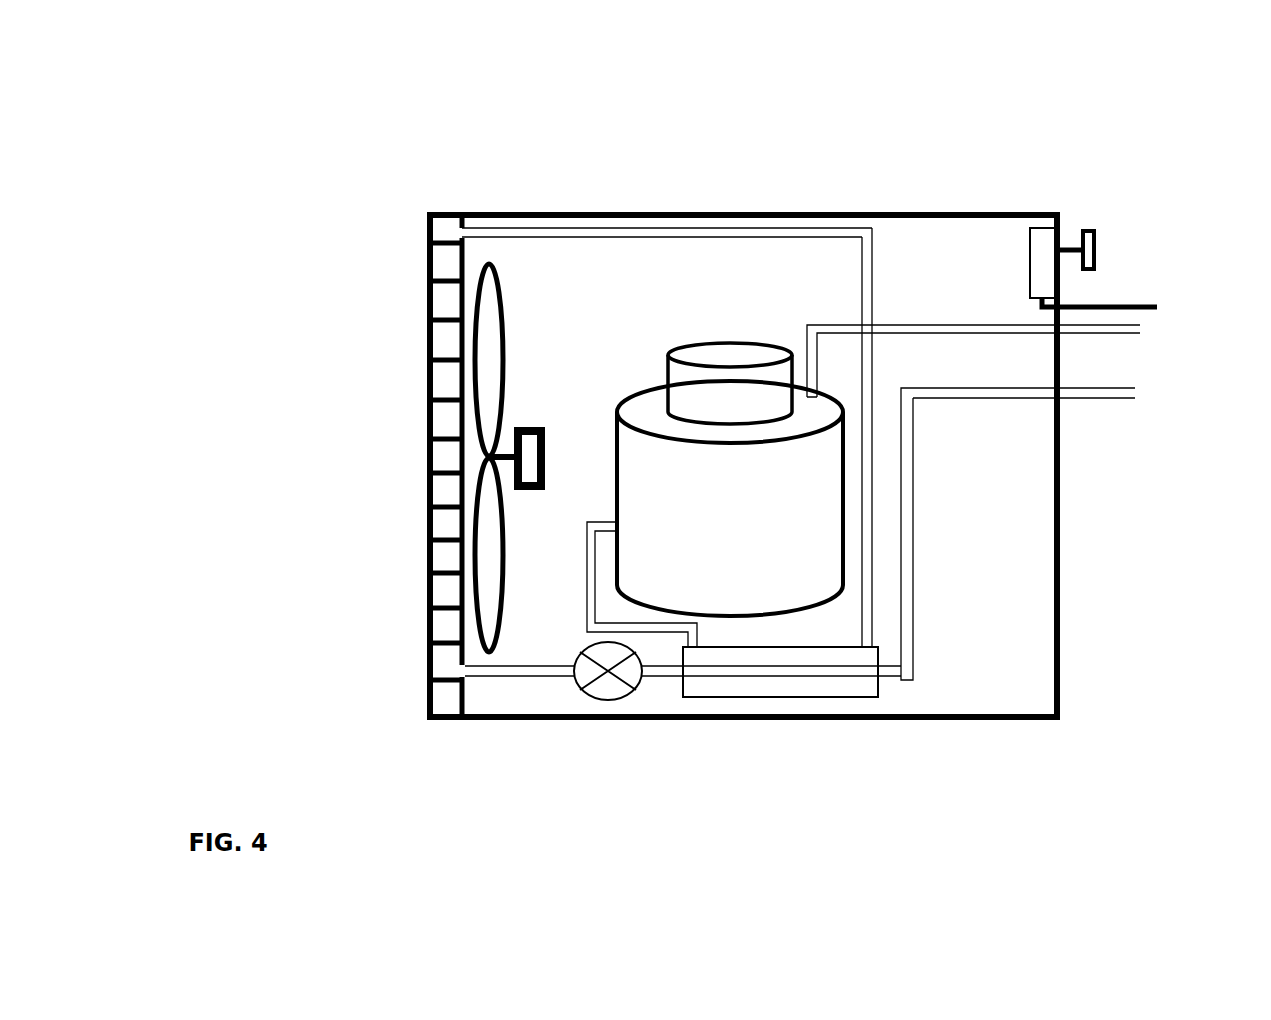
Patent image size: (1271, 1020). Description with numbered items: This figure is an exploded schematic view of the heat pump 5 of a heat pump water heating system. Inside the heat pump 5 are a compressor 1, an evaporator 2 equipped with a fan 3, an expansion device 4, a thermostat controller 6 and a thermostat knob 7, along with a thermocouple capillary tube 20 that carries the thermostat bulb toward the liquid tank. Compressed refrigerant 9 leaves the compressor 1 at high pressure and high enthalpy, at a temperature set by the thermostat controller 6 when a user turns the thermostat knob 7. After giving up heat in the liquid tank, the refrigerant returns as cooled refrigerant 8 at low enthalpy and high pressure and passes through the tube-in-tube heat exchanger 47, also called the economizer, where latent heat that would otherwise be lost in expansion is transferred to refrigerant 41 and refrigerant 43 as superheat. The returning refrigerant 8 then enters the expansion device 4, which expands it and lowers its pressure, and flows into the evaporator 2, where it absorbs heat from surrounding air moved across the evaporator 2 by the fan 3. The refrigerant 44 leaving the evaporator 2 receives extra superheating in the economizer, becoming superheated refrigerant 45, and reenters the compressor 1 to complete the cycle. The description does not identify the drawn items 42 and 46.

The compressor 1 is at (734, 583).
The evaporator 2 is at (416, 622).
The fan 3 is at (518, 270).
The expansion device 4 is at (612, 713).
The heat pump 5 is at (742, 196).
The thermostat controller 6 is at (1047, 239).
The thermostat knob 7 is at (1112, 217).
The cooled refrigerant 8 is at (1159, 398).
The compressed refrigerant 9 is at (1150, 328).
The thermocouple capillary tube 20 is at (1140, 294).
The refrigerant 41 is at (577, 574).
The outlet duct 42 is at (490, 695).
The refrigerant 43 is at (838, 702).
The refrigerant 44 is at (643, 258).
The superheated refrigerant 45 is at (852, 625).
The pipes 46 is at (992, 410).
The tube-in-tube heat exchanger 47 is at (719, 714).